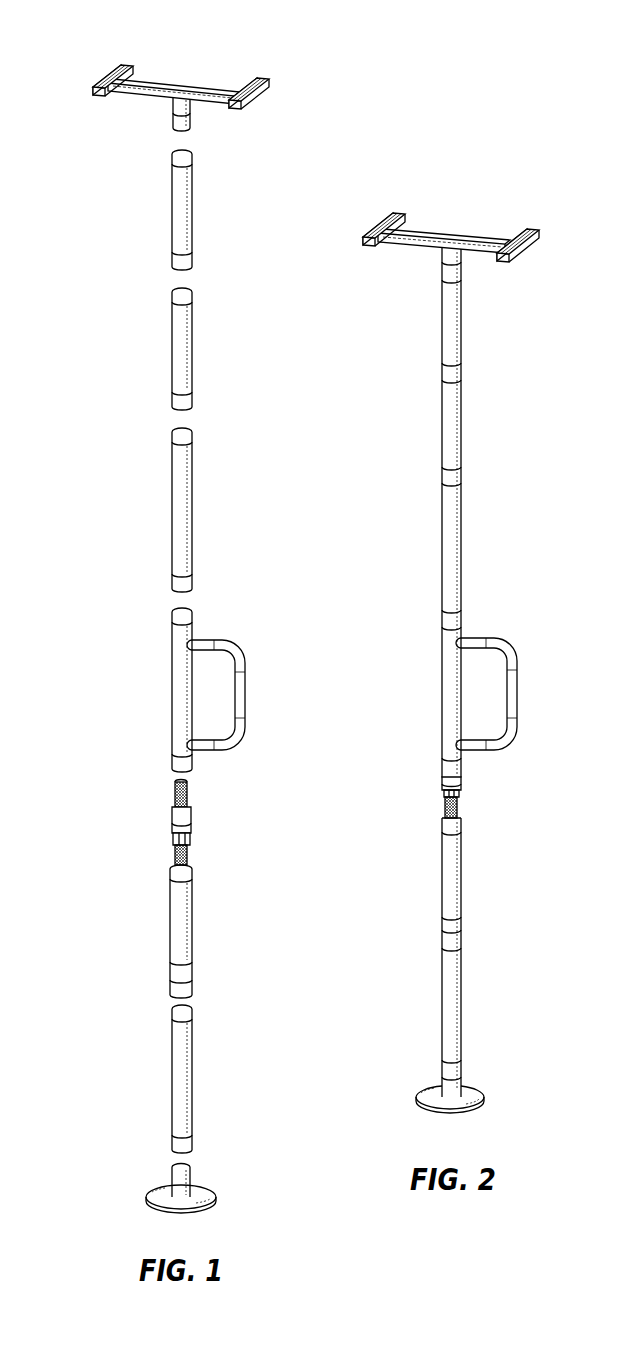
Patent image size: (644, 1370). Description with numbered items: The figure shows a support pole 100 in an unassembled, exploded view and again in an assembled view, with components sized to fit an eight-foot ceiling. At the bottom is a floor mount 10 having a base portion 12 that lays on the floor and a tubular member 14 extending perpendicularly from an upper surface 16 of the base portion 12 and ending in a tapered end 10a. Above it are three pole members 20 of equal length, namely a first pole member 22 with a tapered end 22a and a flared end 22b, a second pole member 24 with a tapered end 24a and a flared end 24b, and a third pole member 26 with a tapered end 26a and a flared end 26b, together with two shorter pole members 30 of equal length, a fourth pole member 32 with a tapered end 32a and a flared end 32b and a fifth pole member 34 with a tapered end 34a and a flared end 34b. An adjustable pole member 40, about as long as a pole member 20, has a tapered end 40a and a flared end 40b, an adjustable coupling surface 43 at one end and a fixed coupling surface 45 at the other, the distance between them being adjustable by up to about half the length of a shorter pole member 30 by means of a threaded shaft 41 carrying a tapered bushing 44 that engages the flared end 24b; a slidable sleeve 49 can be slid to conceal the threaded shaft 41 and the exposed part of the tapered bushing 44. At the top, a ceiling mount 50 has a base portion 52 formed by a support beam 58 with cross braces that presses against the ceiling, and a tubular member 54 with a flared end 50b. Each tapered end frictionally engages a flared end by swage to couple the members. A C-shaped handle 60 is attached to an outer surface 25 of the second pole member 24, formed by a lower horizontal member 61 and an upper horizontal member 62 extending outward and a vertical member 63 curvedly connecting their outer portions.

In FIG. 1, the support pole 100 is at (215, 621).
In FIG. 2, the support pole 100 is at (481, 663).
In FIG. 1, the floor mount 10 is at (173, 1190).
In FIG. 1, the tapered end 10a is at (190, 1175).
In FIG. 1, the base portion 12 is at (215, 1200).
In FIG. 1, the tubular member 14 is at (158, 1205).
In FIG. 1, the upper surface 16 is at (205, 1193).
In FIG. 1, the pole members 20 is at (173, 789).
In FIG. 1, the first pole member 22 is at (220, 1077).
In FIG. 1, the tapered end 22a is at (188, 1015).
In FIG. 1, the flared end 22b is at (183, 1145).
In FIG. 1, the second pole member 24 is at (140, 688).
In FIG. 1, the tapered end 24a is at (174, 621).
In FIG. 1, the flared end 24b is at (178, 765).
In FIG. 1, the outer surface 25 is at (178, 722).
In FIG. 1, the third pole member 26 is at (224, 509).
In FIG. 1, the tapered end 26a is at (188, 437).
In FIG. 1, the flared end 26b is at (183, 584).
In FIG. 1, the shorter pole members 30 is at (173, 280).
In FIG. 1, the fourth pole member 32 is at (224, 344).
In FIG. 1, the tapered end 32a is at (188, 298).
In FIG. 1, the flared end 32b is at (183, 400).
In FIG. 1, the fifth pole member 34 is at (181, 210).
In FIG. 1, the tapered end 34a is at (188, 158).
In FIG. 1, the flared end 34b is at (183, 263).
In FIG. 1, the adjustable pole member 40 is at (170, 889).
In FIG. 1, the tapered end 40a is at (172, 820).
In FIG. 1, the flared end 40b is at (178, 988).
In FIG. 2, the threaded shaft 41 is at (445, 810).
In FIG. 1, the adjustable coupling surface 43 is at (190, 815).
In FIG. 2, the tapered bushing 44 is at (461, 783).
In FIG. 1, the fixed coupling surface 45 is at (185, 970).
In FIG. 2, the slidable sleeve 49 is at (452, 880).
In FIG. 1, the ceiling mount 50 is at (167, 83).
In FIG. 1, the flared end 50b is at (173, 120).
In FIG. 1, the base portion 52 is at (222, 80).
In FIG. 1, the tubular member 54 is at (175, 131).
In FIG. 1, the support beam 58 is at (140, 78).
In FIG. 1, the handle 60 is at (260, 688).
In FIG. 1, the lower horizontal member 61 is at (205, 750).
In FIG. 1, the upper horizontal member 62 is at (205, 640).
In FIG. 1, the vertical member 63 is at (247, 695).